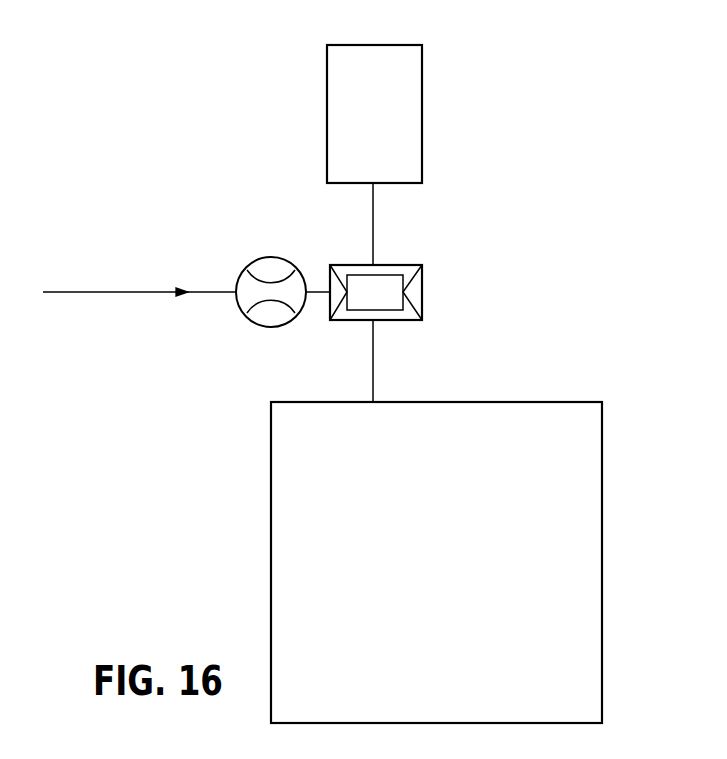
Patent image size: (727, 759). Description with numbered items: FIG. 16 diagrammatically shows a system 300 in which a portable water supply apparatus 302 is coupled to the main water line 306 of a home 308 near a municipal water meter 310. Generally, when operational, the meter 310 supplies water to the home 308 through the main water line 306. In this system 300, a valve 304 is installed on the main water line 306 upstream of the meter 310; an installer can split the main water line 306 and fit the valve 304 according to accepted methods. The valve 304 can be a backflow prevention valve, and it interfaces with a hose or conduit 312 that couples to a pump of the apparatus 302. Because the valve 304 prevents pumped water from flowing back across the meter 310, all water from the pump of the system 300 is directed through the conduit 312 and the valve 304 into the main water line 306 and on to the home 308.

The system 300 is at (478, 112).
The apparatus 302 is at (391, 119).
The valve 304 is at (423, 290).
The main water line 306 is at (320, 296).
The home 308 is at (453, 560).
The meter 310 is at (252, 260).
The hose or conduit 312 is at (350, 232).